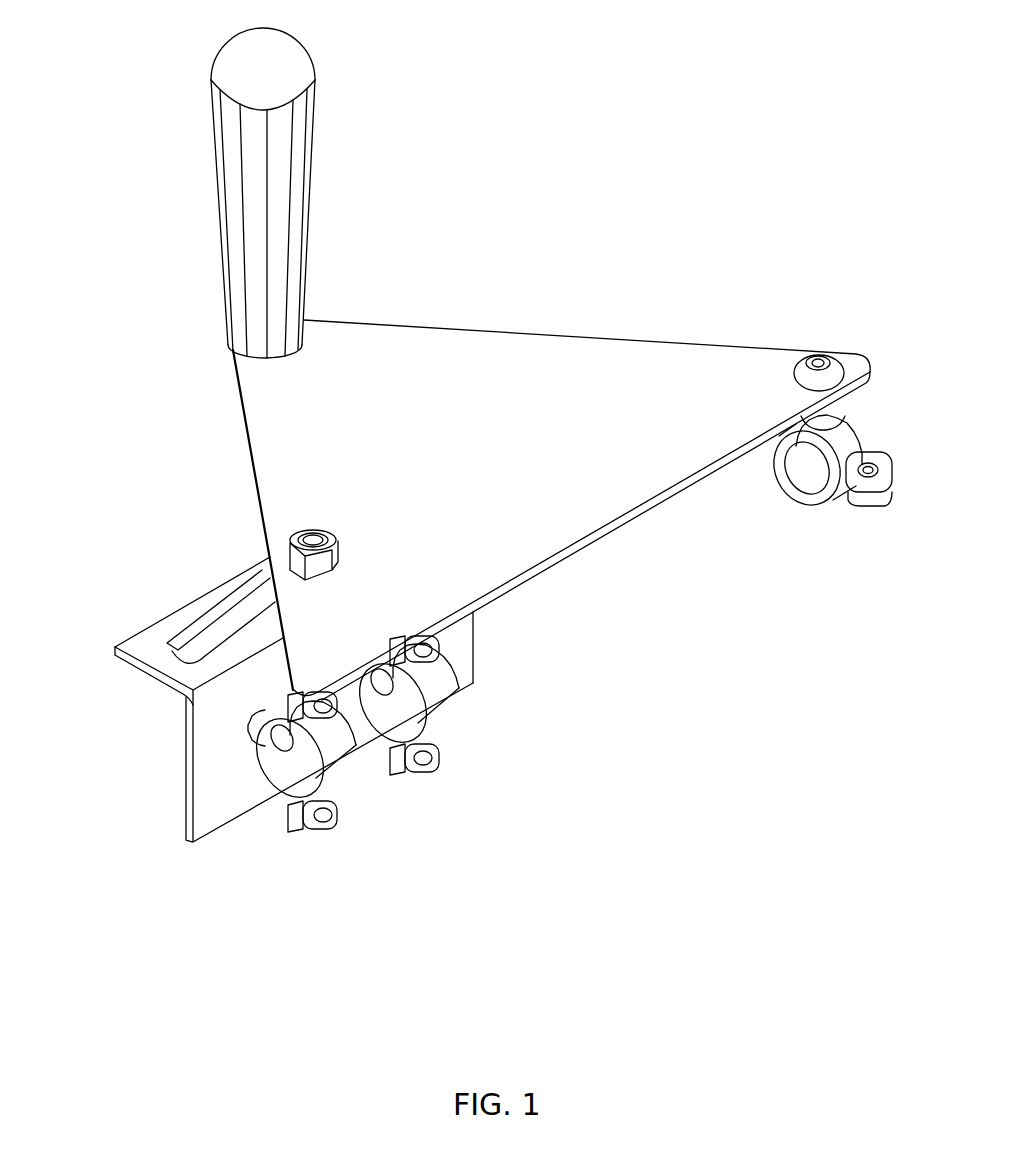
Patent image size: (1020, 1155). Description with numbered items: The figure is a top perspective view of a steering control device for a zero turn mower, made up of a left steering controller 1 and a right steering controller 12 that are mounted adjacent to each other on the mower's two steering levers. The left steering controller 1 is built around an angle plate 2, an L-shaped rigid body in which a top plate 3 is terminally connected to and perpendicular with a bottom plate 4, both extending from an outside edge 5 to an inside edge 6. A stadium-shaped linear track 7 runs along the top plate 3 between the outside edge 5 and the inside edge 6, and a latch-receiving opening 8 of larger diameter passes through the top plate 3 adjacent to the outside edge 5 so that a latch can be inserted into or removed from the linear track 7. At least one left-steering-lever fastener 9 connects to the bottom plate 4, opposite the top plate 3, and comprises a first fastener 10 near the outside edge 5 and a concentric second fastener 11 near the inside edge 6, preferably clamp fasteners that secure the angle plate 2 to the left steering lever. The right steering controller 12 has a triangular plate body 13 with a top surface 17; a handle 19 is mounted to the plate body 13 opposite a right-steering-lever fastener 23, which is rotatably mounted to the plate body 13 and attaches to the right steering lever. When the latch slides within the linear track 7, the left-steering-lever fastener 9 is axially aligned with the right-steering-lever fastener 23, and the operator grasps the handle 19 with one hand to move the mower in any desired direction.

The left steering controller 1 is at (120, 768).
The angle plate 2 is at (290, 692).
The top plate 3 is at (257, 568).
The bottom plate 4 is at (203, 832).
The outside edge 5 is at (192, 787).
The inside edge 6 is at (474, 651).
The linear track 7 is at (234, 626).
The latch-receiving opening 8 is at (166, 647).
The left-steering-lever fastener 9 is at (395, 740).
The first fastener 10 is at (335, 803).
The second fastener 11 is at (453, 717).
The right steering controller 12 is at (782, 279).
The plate body 13 is at (474, 331).
The top surface 17 is at (482, 477).
The handle 19 is at (314, 130).
The right-steering-lever fastener 23 is at (890, 478).